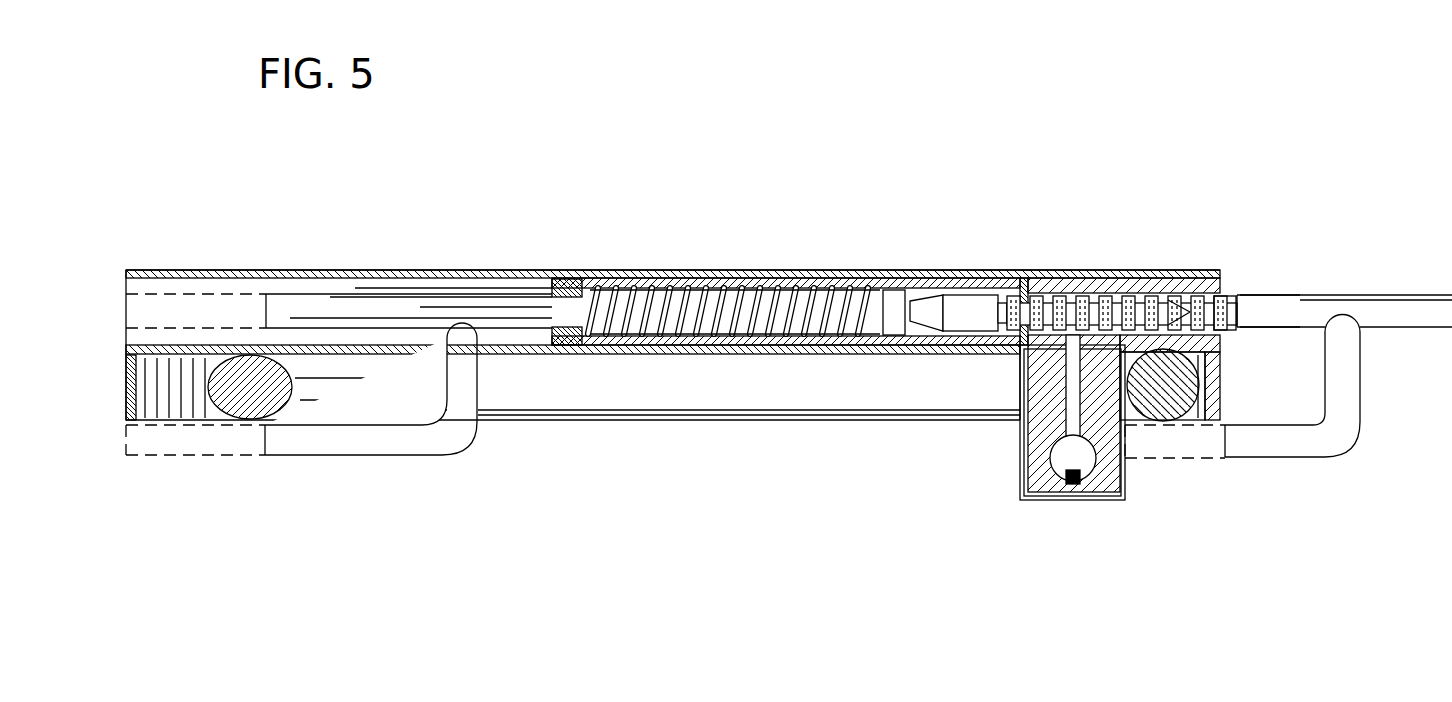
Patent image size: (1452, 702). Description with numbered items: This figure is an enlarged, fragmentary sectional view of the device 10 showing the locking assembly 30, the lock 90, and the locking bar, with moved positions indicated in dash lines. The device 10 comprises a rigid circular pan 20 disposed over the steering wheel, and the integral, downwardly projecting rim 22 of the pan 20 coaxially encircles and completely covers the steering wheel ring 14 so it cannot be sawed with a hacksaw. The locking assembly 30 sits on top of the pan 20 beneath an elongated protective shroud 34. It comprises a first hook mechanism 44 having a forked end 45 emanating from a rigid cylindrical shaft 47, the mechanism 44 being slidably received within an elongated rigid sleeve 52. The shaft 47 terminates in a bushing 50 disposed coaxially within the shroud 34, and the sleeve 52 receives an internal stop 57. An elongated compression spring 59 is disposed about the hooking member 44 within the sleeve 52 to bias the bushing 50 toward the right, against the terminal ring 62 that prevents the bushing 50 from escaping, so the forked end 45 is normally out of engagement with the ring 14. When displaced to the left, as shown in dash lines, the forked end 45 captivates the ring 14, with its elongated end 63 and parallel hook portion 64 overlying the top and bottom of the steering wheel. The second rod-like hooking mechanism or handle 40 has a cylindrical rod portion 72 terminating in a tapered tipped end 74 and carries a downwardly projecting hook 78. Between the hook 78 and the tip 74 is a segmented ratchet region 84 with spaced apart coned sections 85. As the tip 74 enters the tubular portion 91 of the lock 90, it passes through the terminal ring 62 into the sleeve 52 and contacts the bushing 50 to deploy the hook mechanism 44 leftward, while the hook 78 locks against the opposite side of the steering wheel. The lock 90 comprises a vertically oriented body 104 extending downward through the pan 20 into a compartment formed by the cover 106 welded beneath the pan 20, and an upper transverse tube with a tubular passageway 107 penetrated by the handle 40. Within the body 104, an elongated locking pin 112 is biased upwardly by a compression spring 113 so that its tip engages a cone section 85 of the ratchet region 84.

The device 10 is at (868, 118).
The steering wheel ring 14 is at (235, 378).
The pan 20 is at (526, 268).
The rim 22 is at (128, 398).
The locking assembly 30 is at (625, 390).
The shroud 34 is at (476, 268).
The handle 40 is at (1405, 285).
The first hook mechanism 44 is at (430, 290).
The forked end 45 is at (310, 410).
The shaft 47 is at (815, 340).
The bushing 50 is at (893, 347).
The sleeve 52 is at (762, 283).
The stop 57 is at (560, 280).
The compression spring 59 is at (742, 320).
The terminal ring 62 is at (1005, 282).
The elongated end 63 is at (178, 290).
The hook portion 64 is at (176, 460).
The rod portion 72 is at (1285, 316).
The tipped end 74 is at (925, 318).
The hook 78 is at (1220, 460).
The ratchet region 84 is at (1228, 290).
The coned sections 85 is at (1063, 300).
The lock 90 is at (1112, 502).
The tubular portion 91 is at (1128, 292).
The body 104 is at (1030, 465).
The cover 106 is at (1020, 492).
The tubular passageway 107 is at (1190, 316).
The locking pin 112 is at (1055, 400).
The compression spring 113 is at (1072, 486).